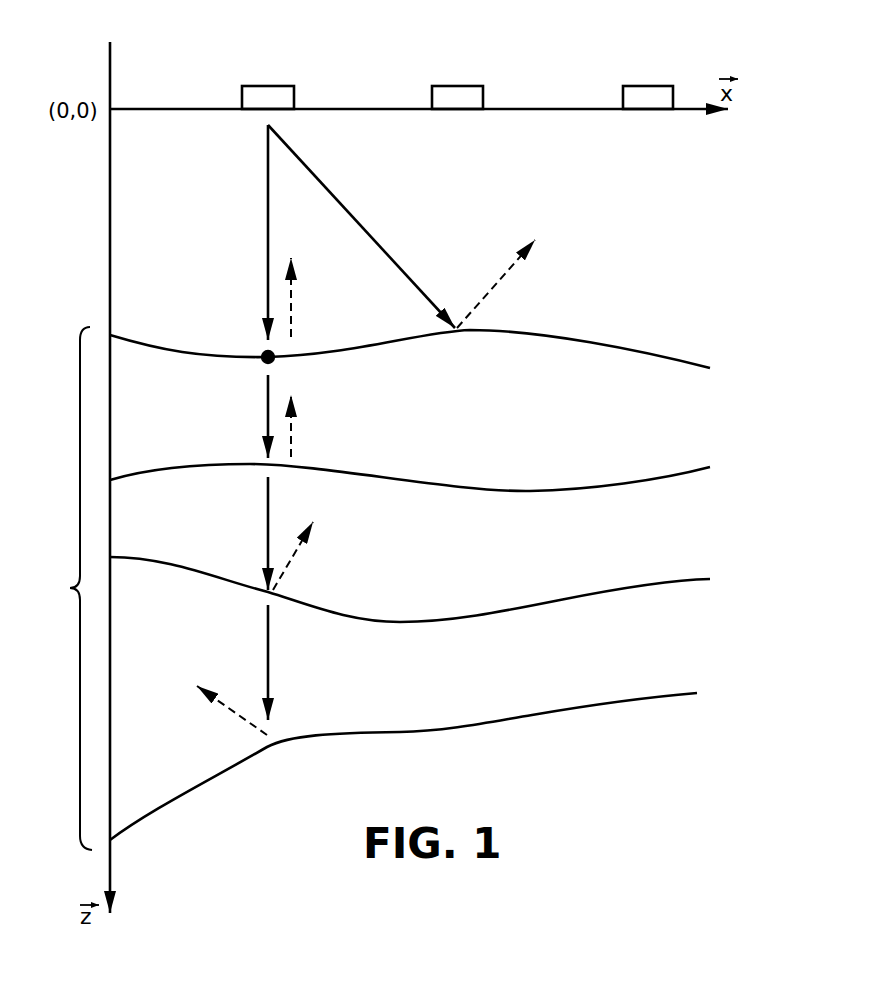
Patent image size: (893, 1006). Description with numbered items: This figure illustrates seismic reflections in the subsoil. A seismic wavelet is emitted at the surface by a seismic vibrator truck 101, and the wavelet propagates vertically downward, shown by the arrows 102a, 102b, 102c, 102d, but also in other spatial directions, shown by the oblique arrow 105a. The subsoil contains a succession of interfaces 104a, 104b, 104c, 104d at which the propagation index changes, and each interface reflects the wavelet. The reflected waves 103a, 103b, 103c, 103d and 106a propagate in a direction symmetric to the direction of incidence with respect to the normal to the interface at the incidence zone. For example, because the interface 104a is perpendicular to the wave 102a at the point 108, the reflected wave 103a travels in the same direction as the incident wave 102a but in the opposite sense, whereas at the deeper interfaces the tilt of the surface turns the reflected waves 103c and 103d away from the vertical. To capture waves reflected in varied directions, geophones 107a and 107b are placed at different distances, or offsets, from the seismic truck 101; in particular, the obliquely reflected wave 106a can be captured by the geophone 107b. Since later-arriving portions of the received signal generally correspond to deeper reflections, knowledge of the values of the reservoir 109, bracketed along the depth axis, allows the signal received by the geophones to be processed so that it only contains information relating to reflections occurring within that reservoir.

The seismic vibrator truck 101 is at (255, 86).
The geophone 107a is at (448, 86).
The geophone 107b is at (642, 86).
The vertically propagated wavelet arrow 102a is at (268, 168).
The vertically propagated wavelet arrow 102b is at (268, 400).
The vertically propagated wavelet arrow 102c is at (268, 510).
The vertically propagated wavelet arrow 102d is at (268, 635).
The reflected wave 103a is at (300, 288).
The reflected wave 103b is at (300, 433).
The reflected wave 103c is at (303, 555).
The reflected wave 103d is at (268, 722).
The interface 104a is at (553, 338).
The interface 104b is at (510, 488).
The interface 104c is at (518, 610).
The interface 104d is at (532, 715).
The obliquely propagated wavelet arrow 105a is at (356, 220).
The reflected wave 106a is at (503, 272).
The point 108 is at (263, 352).
The reservoir 109 is at (57, 588).